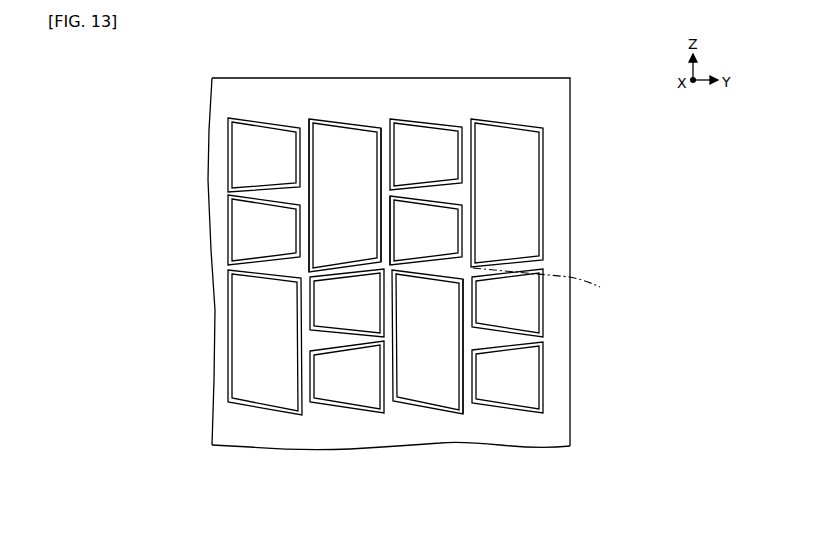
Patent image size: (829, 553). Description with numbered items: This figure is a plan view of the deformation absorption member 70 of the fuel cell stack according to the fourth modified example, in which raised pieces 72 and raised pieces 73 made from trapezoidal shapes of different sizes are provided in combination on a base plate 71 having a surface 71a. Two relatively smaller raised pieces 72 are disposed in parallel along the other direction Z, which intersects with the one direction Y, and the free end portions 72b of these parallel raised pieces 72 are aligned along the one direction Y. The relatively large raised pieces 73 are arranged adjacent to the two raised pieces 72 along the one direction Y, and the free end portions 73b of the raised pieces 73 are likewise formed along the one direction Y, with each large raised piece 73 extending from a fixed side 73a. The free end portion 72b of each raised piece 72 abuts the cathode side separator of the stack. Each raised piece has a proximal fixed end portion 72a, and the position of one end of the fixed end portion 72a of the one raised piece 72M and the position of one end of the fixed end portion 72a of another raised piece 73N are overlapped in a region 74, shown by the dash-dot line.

The deformation absorption member 70 is at (112, 53).
The base plate 71 is at (212, 322).
The surface of base plate 71a is at (230, 424).
The raised piece 72 is at (423, 238).
The fixed end portion 72a is at (387, 235).
The free end portion 72b is at (469, 372).
The raised piece 72M is at (520, 298).
The raised piece 73 is at (340, 137).
The first side portion of second fin 73a is at (309, 122).
The free end portion 73b is at (382, 190).
The raised piece 73N is at (493, 137).
The region 74 is at (549, 287).